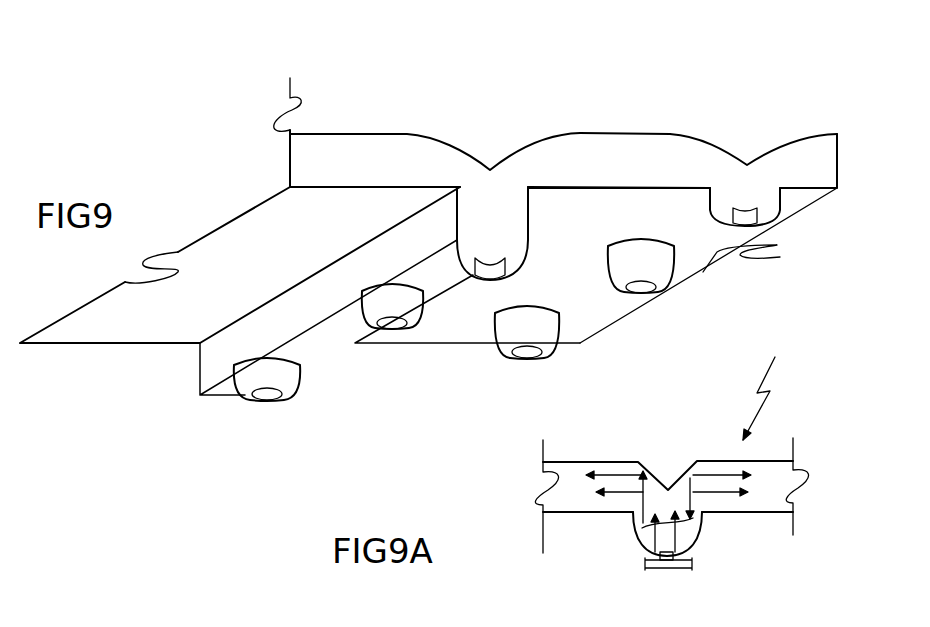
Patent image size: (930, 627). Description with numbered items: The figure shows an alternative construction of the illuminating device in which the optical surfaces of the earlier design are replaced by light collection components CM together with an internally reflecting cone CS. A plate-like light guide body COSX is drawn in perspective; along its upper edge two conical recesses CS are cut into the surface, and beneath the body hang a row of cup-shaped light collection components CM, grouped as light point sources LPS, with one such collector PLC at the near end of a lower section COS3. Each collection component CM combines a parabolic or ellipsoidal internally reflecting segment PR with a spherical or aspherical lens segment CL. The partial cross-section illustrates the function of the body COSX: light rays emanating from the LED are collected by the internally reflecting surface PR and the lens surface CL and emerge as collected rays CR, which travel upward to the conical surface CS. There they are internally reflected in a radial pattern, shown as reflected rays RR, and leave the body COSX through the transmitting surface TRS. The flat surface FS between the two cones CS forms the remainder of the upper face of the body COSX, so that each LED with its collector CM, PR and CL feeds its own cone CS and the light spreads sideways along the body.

In FIG. 9, the light guide body (alternative construction) COSX is at (725, 140).
In FIG. 9, the internally reflecting cone surface CS is at (455, 147).
In FIG. 9A, the internally reflecting cone surface CS is at (648, 470).
In FIG. 9, the flat surface FS is at (583, 139).
In FIG. 9, the transmitting surface TRS is at (610, 187).
In FIG. 9A, the transmitting surface TRS is at (570, 514).
In FIG. 9, the internally reflecting segment PR is at (775, 205).
In FIG. 9A, the internally reflecting segment PR is at (630, 527).
In FIG. 9, the lens surface CL is at (743, 210).
In FIG. 9A, the lens surface CL is at (687, 547).
In FIG. 9, the light collection component CM is at (657, 265).
In FIG. 9, the cross-section 3 COS3 is at (198, 383).
In FIG. 9, the point light collimator PLC is at (288, 382).
In FIG. 9, the light point sources LPS is at (488, 348).
In FIG. 9A, the reflected rays RR is at (620, 490).
In FIG. 9A, the collected rays CR is at (635, 523).
In FIG. 9A, the light emitting diode LED is at (668, 560).